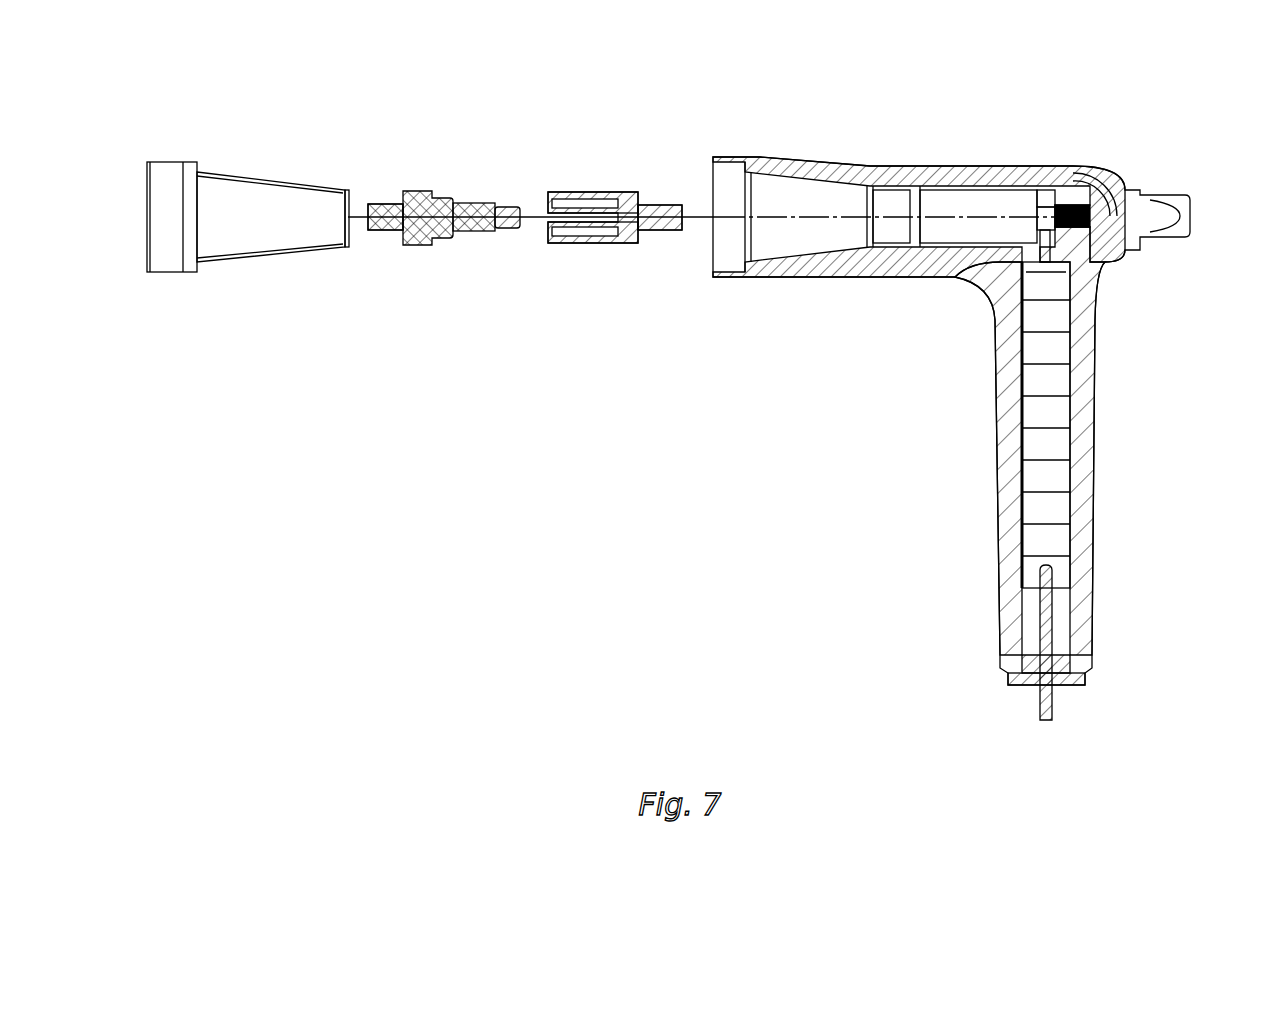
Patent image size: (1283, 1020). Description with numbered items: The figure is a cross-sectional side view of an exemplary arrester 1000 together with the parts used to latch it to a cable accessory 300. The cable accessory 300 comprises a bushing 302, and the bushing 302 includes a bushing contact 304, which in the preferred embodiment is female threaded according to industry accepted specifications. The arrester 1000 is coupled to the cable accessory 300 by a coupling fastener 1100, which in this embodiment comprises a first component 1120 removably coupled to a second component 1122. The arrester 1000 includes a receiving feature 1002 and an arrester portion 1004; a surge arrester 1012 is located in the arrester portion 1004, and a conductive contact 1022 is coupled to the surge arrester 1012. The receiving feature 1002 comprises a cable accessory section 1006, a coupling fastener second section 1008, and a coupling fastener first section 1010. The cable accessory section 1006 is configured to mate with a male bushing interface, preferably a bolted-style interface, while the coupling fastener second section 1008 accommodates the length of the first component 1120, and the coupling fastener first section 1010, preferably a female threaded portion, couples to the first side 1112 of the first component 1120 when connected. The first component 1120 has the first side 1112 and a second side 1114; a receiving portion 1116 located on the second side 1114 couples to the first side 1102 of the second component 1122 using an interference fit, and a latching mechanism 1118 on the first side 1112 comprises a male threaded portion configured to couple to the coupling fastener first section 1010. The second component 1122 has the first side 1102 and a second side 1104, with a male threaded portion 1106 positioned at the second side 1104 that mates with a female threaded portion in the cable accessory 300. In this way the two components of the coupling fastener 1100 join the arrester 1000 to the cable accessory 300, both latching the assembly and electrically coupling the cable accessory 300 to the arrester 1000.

The cable accessory 300 is at (232, 150).
The bushing 302 is at (274, 190).
The bushing contact 304 is at (348, 250).
The coupling fastener 1100 is at (683, 308).
The first side 1102 is at (486, 200).
The second side 1104 is at (392, 198).
The male threaded portion 1106 is at (380, 228).
The first side 1112 is at (663, 192).
The second side 1114 is at (569, 192).
The receiving portion 1116 is at (572, 226).
The latching mechanism 1118 is at (658, 230).
The first component 1120 is at (613, 172).
The second component 1122 is at (440, 186).
The arrester 1000 is at (1205, 150).
The receiving feature 1002 is at (905, 185).
The arrester portion 1004 is at (1103, 506).
The cable accessory section 1006 is at (795, 215).
The coupling fastener second section 1008 is at (957, 237).
The coupling fastener first section 1010 is at (1092, 230).
The surge arrester 1012 is at (1052, 437).
The conductive contact 1022 is at (1050, 192).